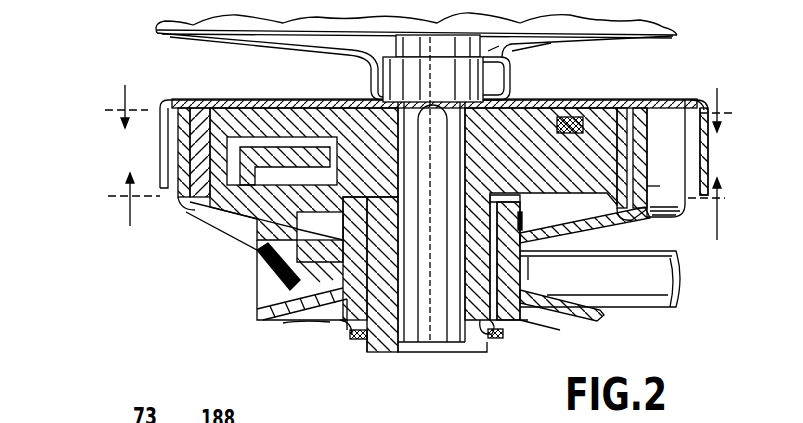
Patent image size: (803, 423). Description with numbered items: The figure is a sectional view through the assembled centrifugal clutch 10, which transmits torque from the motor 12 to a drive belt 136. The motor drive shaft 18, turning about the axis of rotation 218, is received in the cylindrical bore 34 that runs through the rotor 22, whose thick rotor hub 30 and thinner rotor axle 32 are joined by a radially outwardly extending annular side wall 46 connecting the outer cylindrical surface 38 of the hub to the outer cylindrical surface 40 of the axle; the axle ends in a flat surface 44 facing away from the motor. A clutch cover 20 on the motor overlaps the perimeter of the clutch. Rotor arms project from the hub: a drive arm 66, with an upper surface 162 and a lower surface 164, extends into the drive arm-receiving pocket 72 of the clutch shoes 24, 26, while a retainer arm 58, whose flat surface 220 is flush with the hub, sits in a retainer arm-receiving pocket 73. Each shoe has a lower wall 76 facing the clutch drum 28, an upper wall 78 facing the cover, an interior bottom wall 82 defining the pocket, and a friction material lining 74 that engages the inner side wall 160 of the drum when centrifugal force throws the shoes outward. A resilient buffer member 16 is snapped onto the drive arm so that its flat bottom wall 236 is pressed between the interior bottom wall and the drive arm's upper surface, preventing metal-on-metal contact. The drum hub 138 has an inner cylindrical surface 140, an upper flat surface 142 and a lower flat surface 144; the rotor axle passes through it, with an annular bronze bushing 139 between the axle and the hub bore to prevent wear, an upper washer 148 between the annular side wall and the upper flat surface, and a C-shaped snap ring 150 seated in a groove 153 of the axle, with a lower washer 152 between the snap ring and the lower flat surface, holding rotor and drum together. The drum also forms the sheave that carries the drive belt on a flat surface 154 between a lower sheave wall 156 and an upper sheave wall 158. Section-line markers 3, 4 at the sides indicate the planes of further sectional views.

The centrifugal clutch assembly 10 is at (165, 225).
The motor 12 is at (163, 21).
The resilient buffer member 16 is at (248, 133).
The motor drive shaft 18 is at (449, 352).
The clutch cover 20 is at (160, 150).
The rotor 22 is at (325, 193).
The clutch shoe 24 is at (574, 183).
The clutch shoe 26 is at (215, 178).
The clutch drum 28 is at (162, 132).
The rotor hub 30 is at (525, 128).
The rotor axle 32 is at (450, 258).
The cylindrical bore 34 is at (388, 338).
The outer cylindrical surface 38 is at (648, 164).
The outer cylindrical surface 40 is at (545, 318).
The upper flat surface 142 is at (520, 257).
The flat surface 44 is at (472, 352).
The radially outwardly extending annular side wall 46 is at (257, 255).
The retainer arm 58 is at (577, 121).
The drive arm 66 is at (266, 135).
The drive arm-receiving pocket 72 is at (302, 138).
The retainer arm-receiving pocket 73 is at (650, 108).
The friction material lining 74 is at (173, 211).
The lower wall 76 is at (200, 192).
The upper wall 78 is at (232, 130).
The interior bottom wall 82 is at (262, 125).
The drive belt 136 is at (262, 313).
The drum hub 138 is at (525, 320).
The annular bronze bushing 139 is at (500, 110).
The inner cylindrical surface 140 is at (488, 338).
The lower flat surface 144 is at (318, 330).
The upper washer 148 is at (402, 152).
The C-shaped snap ring 150 is at (360, 343).
The lower washer 152 is at (340, 335).
The groove 153 is at (498, 343).
The flat surface 154 is at (290, 320).
The lower sheave wall 156 is at (283, 323).
The upper sheave wall 158 is at (316, 240).
The inner side wall 160 is at (660, 186).
The upper surface 162 is at (334, 132).
The lower surface 164 is at (262, 183).
The axis of rotation 218 is at (393, 382).
The flat surface 220 is at (552, 115).
The flat bottom wall 236 is at (300, 138).
The section line 3- 3 is at (420, 96).
The section line 4- 4 is at (416, 220).